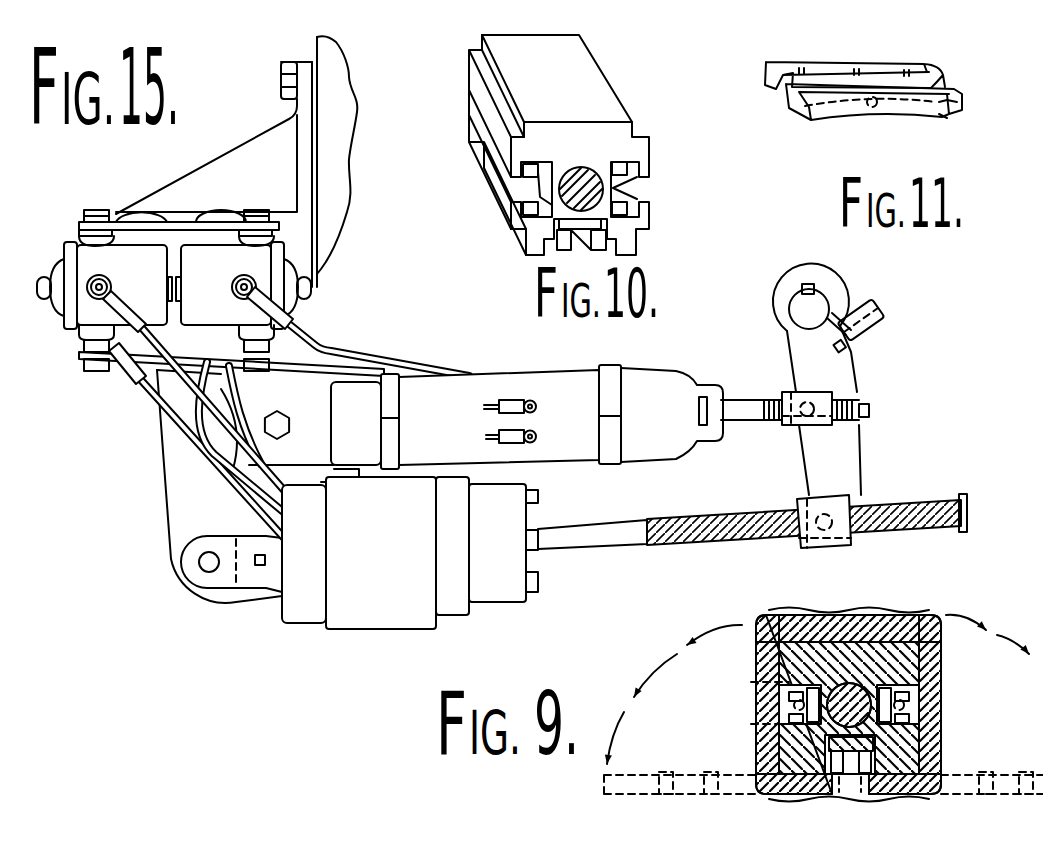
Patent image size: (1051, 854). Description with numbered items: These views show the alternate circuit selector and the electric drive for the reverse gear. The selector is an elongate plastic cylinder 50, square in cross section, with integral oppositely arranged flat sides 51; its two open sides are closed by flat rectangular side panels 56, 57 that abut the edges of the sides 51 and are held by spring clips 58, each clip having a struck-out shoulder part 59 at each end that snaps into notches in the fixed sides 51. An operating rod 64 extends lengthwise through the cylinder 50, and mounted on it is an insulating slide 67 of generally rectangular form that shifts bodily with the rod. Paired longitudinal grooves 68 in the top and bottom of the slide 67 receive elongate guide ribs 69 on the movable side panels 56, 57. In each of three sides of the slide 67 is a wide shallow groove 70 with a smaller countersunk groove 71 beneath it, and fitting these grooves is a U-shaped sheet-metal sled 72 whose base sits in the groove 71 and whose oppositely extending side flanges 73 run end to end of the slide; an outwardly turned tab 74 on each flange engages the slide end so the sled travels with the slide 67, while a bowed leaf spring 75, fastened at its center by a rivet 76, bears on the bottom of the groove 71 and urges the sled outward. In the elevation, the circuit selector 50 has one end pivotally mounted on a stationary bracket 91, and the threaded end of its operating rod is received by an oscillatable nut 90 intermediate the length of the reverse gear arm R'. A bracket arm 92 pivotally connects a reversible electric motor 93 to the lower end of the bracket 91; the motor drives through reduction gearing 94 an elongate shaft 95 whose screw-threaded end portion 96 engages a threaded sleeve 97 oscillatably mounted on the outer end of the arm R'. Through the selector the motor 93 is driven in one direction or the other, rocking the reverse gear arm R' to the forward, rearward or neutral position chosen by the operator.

In FIG. 15, the circuit selector cylinder 50 is at (645, 364).
In FIG. 15, the operating rod 64 is at (763, 387).
In FIG. 15, the oscillatable nut 90 is at (838, 420).
In FIG. 15, the reverse gear arm R' is at (836, 379).
In FIG. 15, the stationary bracket 91 is at (180, 473).
In FIG. 15, the bracket arm 92 is at (252, 580).
In FIG. 15, the reversible electric motor 93 is at (392, 615).
In FIG. 15, the reduction gearing 94 is at (512, 593).
In FIG. 15, the elongate shaft 95 is at (612, 535).
In FIG. 15, the screw-threaded end portion 96 is at (898, 528).
In FIG. 15, the threaded sleeve 97 is at (841, 540).
In FIG. 10, the slide 67 is at (628, 80).
In FIG. 9, the slide 67 is at (842, 614).
In FIG. 10, the longitudinal grooves 68 is at (650, 237).
In FIG. 9, the longitudinal grooves 68 is at (772, 755).
In FIG. 10, the wide shallow groove 70 is at (642, 205).
In FIG. 10, the countersunk groove 71 is at (642, 178).
In FIG. 9, the countersunk groove 71 is at (760, 692).
In FIG. 10, the sled 72 is at (655, 186).
In FIG. 11, the sled 72 is at (952, 78).
In FIG. 9, the sled 72 is at (908, 707).
In FIG. 11, the side flanges 73 is at (912, 42).
In FIG. 10, the outwardly turned tab 74 is at (636, 160).
In FIG. 11, the outwardly turned tab 74 is at (947, 99).
In FIG. 11, the bowed leaf spring 75 is at (947, 112).
In FIG. 11, the rivet 76 is at (871, 112).
In FIG. 9, the guide ribs 69 is at (762, 622).
In FIG. 9, the struck-out shoulder part 59 is at (897, 602).
In FIG. 9, the flat sides 51 is at (913, 618).
In FIG. 9, the spring clips 58 is at (941, 616).
In FIG. 9, the side panel 56 is at (758, 656).
In FIG. 9, the side panel 57 is at (940, 660).